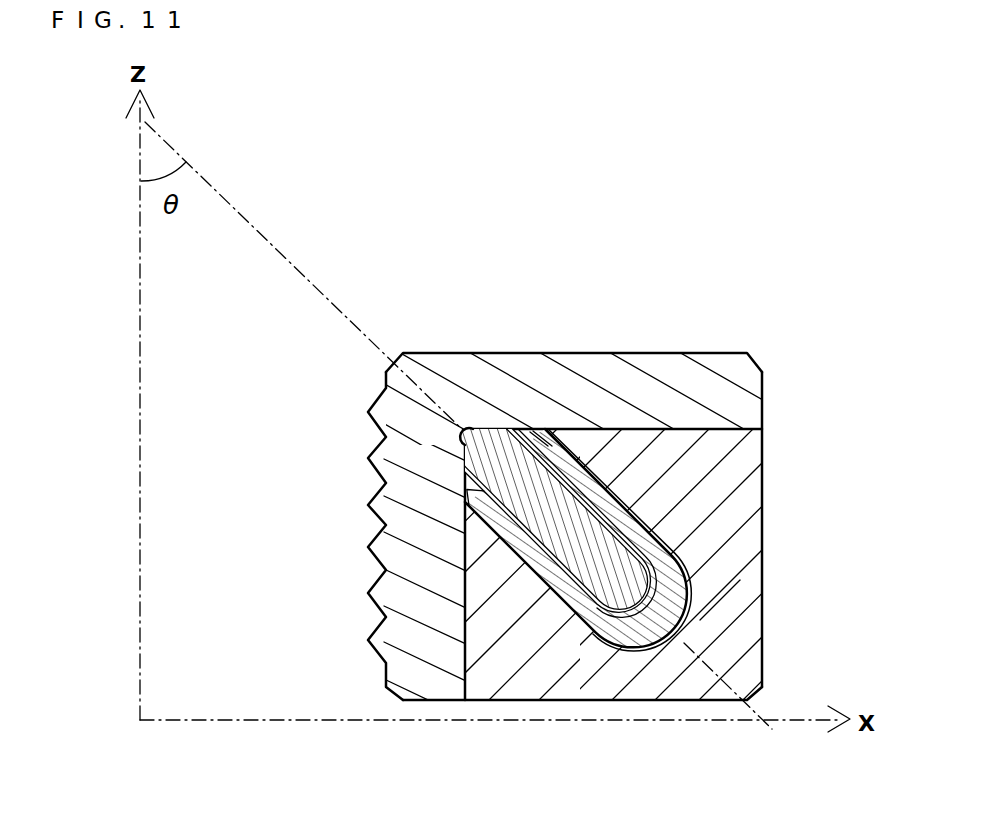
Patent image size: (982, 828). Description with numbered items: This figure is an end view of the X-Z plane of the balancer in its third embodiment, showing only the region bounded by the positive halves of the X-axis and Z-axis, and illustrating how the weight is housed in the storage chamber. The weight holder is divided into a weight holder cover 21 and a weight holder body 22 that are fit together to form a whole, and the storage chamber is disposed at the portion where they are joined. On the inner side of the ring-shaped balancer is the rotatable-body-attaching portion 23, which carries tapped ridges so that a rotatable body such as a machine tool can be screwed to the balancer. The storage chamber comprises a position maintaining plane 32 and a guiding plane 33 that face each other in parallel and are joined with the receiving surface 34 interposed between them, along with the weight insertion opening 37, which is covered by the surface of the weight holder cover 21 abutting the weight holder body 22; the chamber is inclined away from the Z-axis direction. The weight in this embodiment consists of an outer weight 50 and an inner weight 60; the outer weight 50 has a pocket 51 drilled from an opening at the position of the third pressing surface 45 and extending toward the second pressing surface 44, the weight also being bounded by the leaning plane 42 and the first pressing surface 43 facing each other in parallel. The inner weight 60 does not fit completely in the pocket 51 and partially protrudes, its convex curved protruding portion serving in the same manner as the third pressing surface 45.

The weight holder cover 21 is at (590, 406).
The weight holder body 22 is at (536, 664).
The rotatable-body-attaching portion 23 is at (368, 450).
The position maintaining plane 32 is at (597, 655).
The guiding plane 33 is at (662, 530).
The receiving surface 34 is at (688, 613).
The weight insertion opening 37 is at (516, 433).
The leaning plane 42 is at (572, 625).
The first pressing surface 43 is at (660, 528).
The second pressing surface 44 is at (685, 622).
The third pressing surface 45 is at (478, 428).
The outer weight 50 is at (603, 487).
The pocket 51 is at (463, 470).
The inner weight 60 is at (588, 546).